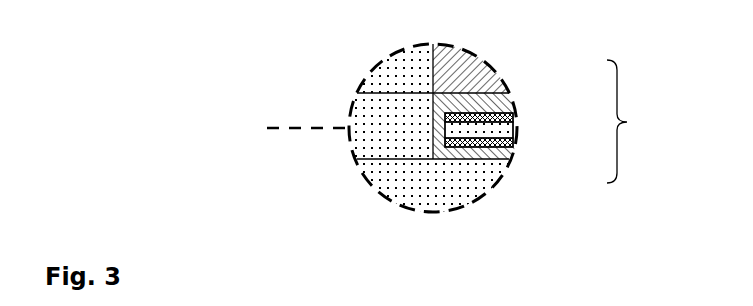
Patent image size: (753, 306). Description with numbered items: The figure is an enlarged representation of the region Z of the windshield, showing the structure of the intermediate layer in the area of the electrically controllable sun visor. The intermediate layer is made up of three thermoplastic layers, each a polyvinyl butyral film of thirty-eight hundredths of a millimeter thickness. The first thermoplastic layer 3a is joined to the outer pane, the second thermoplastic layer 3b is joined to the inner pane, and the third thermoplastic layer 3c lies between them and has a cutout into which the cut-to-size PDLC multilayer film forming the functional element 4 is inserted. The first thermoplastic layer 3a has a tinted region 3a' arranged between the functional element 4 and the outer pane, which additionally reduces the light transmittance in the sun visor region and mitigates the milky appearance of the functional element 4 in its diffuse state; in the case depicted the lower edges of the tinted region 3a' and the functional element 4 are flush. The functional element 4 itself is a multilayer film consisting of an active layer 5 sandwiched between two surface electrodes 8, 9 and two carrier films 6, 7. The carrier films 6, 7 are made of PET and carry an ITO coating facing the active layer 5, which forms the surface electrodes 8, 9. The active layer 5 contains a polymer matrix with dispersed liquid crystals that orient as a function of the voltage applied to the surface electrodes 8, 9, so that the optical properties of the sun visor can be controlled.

The first thermoplastic layer 3a is at (384, 91).
The tinted region 3a' is at (485, 56).
The second thermoplastic layer 3b is at (470, 193).
The third thermoplastic layer 3c is at (365, 113).
The functional element 4 is at (632, 121).
The active layer 5 is at (513, 125).
The carrier film 6 is at (507, 90).
The carrier film 7 is at (507, 157).
The surface electrode 8 is at (507, 110).
The surface electrode 9 is at (510, 140).
The region Z is at (289, 130).